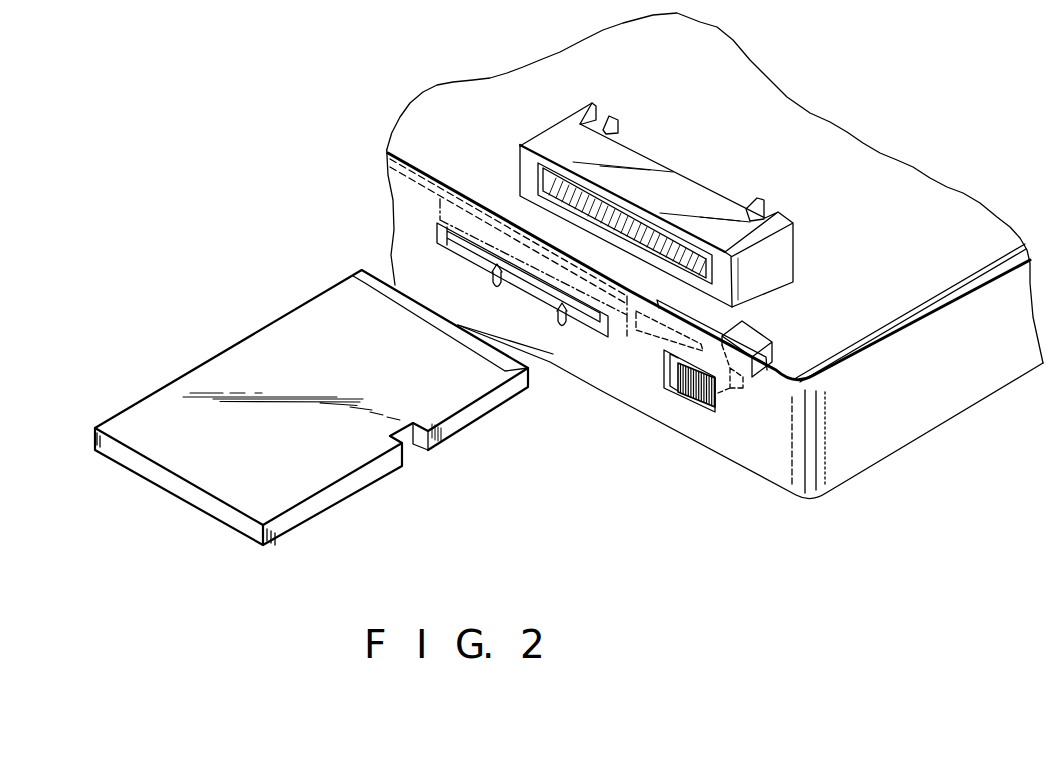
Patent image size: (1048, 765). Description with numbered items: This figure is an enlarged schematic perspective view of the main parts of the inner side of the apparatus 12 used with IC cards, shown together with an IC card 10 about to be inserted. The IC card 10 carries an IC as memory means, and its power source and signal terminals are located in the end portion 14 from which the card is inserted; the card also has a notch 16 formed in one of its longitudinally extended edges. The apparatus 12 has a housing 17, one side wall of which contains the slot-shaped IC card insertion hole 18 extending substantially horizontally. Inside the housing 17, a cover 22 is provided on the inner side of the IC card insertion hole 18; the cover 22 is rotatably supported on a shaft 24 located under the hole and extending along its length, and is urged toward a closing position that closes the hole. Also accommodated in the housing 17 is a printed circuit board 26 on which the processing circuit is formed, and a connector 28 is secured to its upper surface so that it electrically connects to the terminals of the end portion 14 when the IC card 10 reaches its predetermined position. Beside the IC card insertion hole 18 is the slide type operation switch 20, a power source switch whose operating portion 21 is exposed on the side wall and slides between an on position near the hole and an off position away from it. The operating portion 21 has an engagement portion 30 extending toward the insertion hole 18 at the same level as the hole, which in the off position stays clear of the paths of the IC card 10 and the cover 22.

The IC card 10 is at (252, 363).
The apparatus 12 is at (926, 411).
The end portion 14 is at (370, 283).
The notch 16 is at (412, 452).
The housing 17 is at (860, 467).
The IC card insertion hole 18 is at (588, 336).
The slide type operation switch 20 is at (777, 362).
The operating portion 21 is at (686, 397).
The cover 22 is at (441, 208).
The shaft 24 is at (523, 293).
The printed circuit board 26 is at (910, 297).
The connector 28 is at (787, 258).
The engagement portion 30 is at (710, 323).